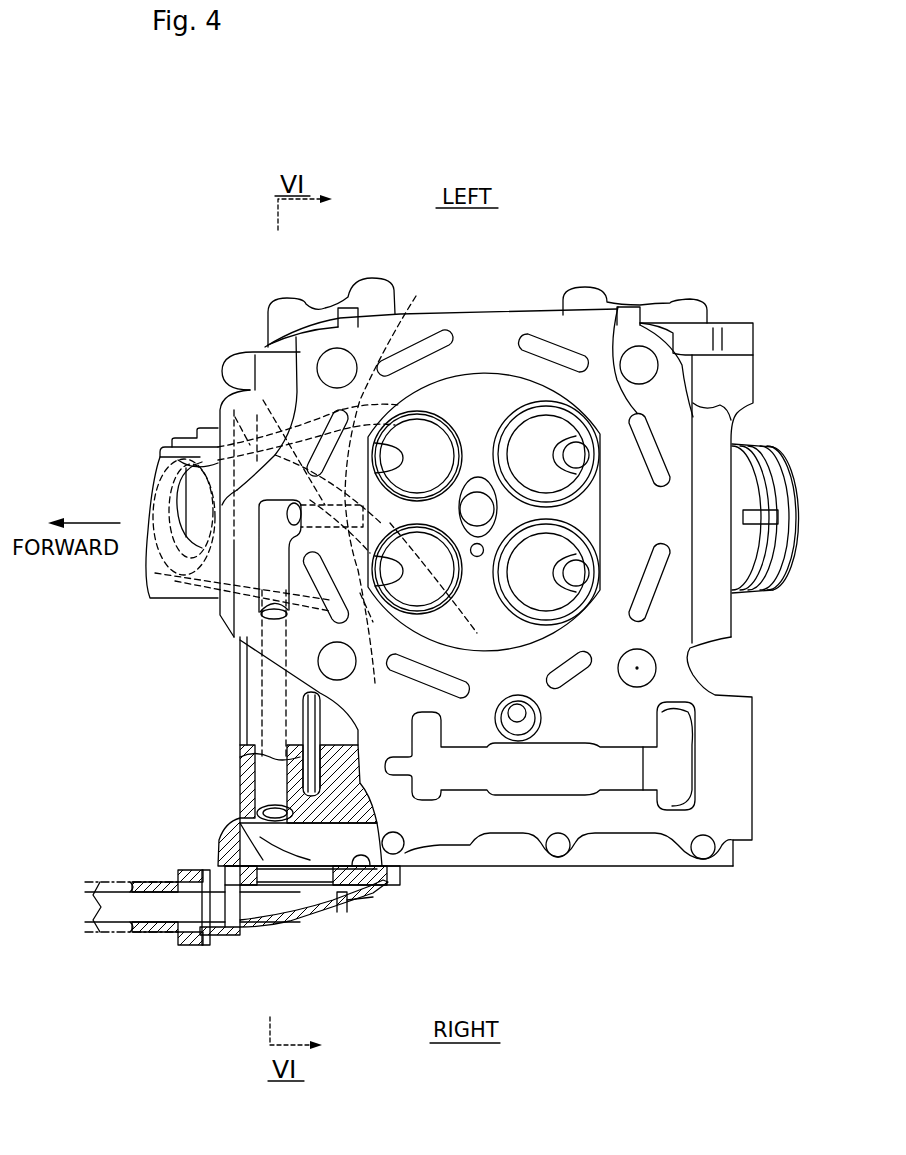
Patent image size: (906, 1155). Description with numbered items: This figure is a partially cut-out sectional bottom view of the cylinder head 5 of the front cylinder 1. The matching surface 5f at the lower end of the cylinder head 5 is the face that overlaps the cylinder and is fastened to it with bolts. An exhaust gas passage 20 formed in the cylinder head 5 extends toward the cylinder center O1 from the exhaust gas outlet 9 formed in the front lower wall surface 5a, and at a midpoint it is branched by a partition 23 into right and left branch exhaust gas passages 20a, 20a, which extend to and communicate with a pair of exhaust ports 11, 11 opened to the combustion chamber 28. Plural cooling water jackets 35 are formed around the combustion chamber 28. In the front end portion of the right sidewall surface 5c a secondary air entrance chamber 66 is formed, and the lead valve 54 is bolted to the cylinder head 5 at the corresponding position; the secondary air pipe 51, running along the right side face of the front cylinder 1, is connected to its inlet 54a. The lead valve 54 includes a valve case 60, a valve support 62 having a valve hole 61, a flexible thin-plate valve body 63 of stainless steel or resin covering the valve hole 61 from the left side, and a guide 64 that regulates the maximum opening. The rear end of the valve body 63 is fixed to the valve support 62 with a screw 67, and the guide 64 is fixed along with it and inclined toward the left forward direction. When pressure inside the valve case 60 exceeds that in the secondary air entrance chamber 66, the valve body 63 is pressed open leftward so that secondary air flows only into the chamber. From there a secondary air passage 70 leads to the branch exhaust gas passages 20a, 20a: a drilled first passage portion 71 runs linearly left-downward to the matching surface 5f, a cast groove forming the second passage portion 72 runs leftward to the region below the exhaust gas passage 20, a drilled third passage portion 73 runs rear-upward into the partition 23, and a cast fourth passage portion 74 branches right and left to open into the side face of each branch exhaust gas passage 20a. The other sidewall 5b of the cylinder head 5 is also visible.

The front cylinder 1 is at (206, 274).
The cylinder head 5 is at (667, 380).
The front lower wall surface 5a is at (236, 660).
The right side wall of cylinder head 5b is at (690, 647).
The right sidewall surface 5c is at (460, 868).
The matching surface 5f is at (480, 347).
The exhaust gas outlet 9 is at (150, 505).
The exhaust ports 11 is at (455, 430).
The exhaust gas passage 20 is at (217, 413).
The branch exhaust gas passages 20a is at (397, 496).
The partition 23 is at (376, 554).
The combustion chamber 28 is at (518, 707).
The cooling water jackets 35 is at (450, 333).
The cylinder center O1 is at (473, 512).
The secondary air pipe 51 is at (104, 935).
The lead valve 54 is at (330, 938).
The inlet 54a is at (210, 942).
The valve case 60 is at (277, 940).
The valve hole 61 is at (307, 877).
The valve support 62 is at (260, 865).
The valve body 63 is at (268, 815).
The guide 64 is at (272, 772).
The secondary air entrance chamber 66 is at (400, 858).
The screw 67 is at (352, 885).
The secondary air passage 70 is at (316, 536).
The first passage portion 71 is at (262, 770).
The second passage portion 72 is at (273, 558).
The third passage portion 73 is at (263, 400).
The fourth passage portion 74 is at (520, 633).